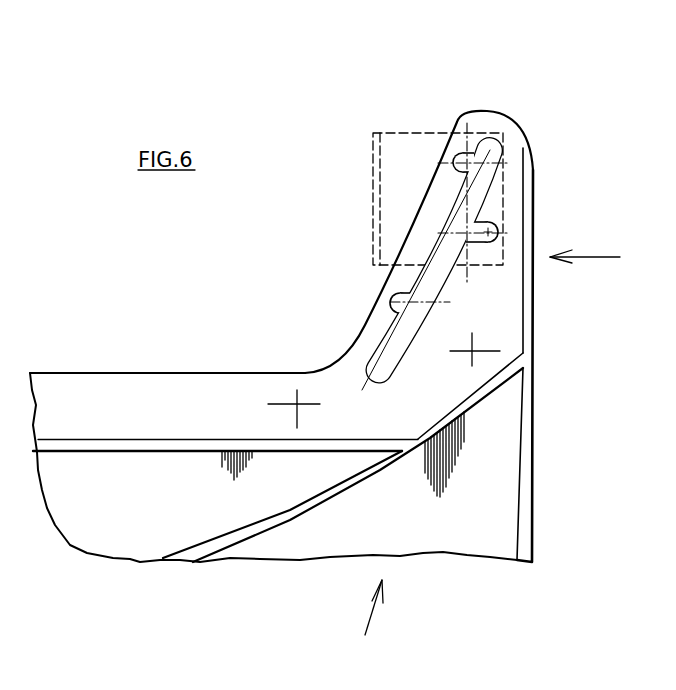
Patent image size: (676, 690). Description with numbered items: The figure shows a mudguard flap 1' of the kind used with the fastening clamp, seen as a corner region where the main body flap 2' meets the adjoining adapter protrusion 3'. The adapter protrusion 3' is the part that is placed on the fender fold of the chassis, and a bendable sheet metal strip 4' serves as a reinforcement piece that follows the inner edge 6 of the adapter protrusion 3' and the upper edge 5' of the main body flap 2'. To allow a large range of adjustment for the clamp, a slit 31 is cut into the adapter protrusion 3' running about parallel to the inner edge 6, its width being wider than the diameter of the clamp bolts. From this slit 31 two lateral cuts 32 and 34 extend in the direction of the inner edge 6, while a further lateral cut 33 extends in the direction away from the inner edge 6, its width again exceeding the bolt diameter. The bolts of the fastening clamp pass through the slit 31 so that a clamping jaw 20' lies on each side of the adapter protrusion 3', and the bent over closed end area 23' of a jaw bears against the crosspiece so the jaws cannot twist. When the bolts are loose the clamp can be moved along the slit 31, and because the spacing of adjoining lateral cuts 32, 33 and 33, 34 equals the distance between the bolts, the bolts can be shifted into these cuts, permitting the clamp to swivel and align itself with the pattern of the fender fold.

The mudguard flap 1' is at (366, 621).
The main body flap 2' is at (283, 401).
The adapter protrusion 3' is at (595, 251).
The sheet metal strip 4' is at (318, 355).
The upper edge 5' is at (167, 323).
The inner edge 6 is at (455, 130).
The clamping jaw 20' is at (431, 154).
The bent over closed end area 23' is at (338, 199).
The slit 31 is at (445, 222).
The lateral cut 32 is at (463, 162).
The lateral cut 33 is at (482, 232).
The lateral cut 34 is at (438, 289).